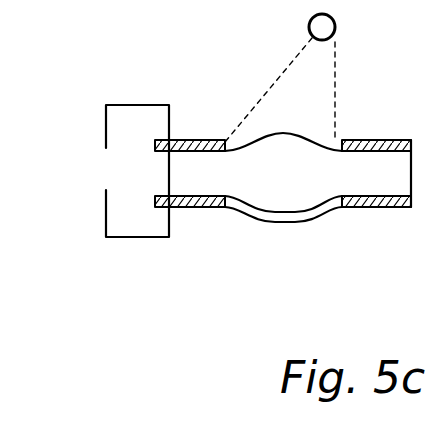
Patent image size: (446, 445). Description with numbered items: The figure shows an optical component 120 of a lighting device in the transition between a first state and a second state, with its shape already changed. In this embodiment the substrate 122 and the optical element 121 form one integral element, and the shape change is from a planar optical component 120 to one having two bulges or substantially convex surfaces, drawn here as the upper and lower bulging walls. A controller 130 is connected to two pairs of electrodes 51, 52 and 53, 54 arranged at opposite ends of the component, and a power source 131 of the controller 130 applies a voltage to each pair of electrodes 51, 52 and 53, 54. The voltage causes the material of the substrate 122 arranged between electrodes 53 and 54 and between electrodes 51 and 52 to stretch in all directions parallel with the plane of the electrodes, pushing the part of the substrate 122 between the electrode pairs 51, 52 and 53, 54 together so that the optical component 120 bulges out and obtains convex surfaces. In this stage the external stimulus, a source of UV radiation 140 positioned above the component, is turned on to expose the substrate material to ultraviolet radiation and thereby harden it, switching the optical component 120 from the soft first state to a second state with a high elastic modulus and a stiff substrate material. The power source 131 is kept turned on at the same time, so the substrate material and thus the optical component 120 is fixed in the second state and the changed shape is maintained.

The optical component 120 is at (343, 256).
The optical element 121 is at (320, 213).
The substrate 122 is at (280, 152).
The controller 130 is at (161, 101).
The power source 131 is at (106, 217).
The source of UV radiation 140 is at (336, 25).
The electrode 51 is at (382, 140).
The electrode 52 is at (395, 207).
The electrode 53 is at (186, 140).
The electrode 54 is at (186, 207).